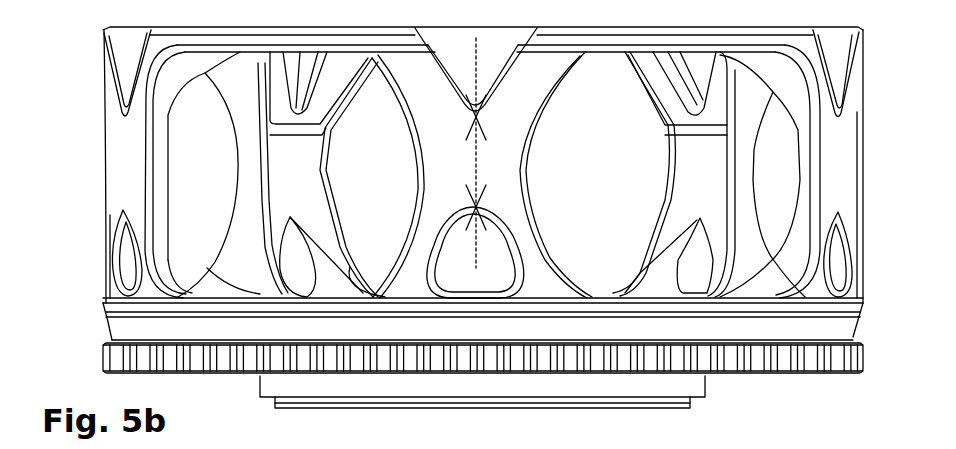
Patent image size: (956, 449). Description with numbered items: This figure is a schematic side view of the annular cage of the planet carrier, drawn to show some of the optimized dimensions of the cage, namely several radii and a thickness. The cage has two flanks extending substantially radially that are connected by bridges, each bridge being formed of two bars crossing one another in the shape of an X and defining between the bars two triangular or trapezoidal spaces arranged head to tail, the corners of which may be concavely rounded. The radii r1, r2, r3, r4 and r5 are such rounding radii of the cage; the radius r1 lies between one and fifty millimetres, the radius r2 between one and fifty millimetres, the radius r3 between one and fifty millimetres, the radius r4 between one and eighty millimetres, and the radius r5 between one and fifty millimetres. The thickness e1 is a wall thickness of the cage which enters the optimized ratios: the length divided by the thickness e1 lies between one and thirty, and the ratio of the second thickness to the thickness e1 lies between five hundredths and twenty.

The radius r1 is at (475, 252).
The radius r2 is at (476, 69).
The radius r3 is at (372, 63).
The radius r4 is at (413, 140).
The radius r5 is at (365, 293).
The thickness e1 is at (466, 153).